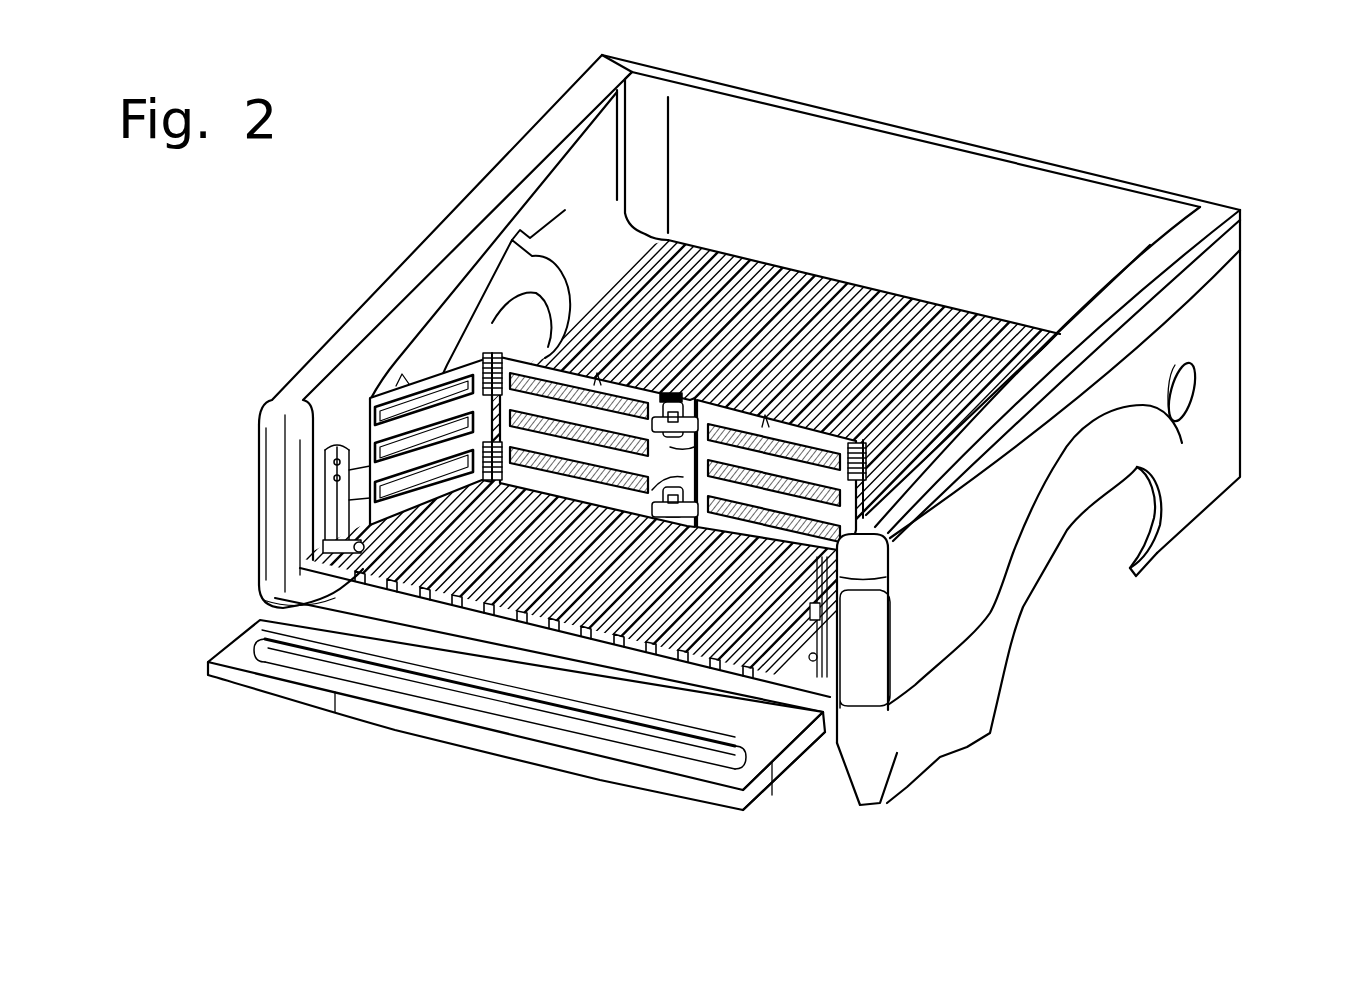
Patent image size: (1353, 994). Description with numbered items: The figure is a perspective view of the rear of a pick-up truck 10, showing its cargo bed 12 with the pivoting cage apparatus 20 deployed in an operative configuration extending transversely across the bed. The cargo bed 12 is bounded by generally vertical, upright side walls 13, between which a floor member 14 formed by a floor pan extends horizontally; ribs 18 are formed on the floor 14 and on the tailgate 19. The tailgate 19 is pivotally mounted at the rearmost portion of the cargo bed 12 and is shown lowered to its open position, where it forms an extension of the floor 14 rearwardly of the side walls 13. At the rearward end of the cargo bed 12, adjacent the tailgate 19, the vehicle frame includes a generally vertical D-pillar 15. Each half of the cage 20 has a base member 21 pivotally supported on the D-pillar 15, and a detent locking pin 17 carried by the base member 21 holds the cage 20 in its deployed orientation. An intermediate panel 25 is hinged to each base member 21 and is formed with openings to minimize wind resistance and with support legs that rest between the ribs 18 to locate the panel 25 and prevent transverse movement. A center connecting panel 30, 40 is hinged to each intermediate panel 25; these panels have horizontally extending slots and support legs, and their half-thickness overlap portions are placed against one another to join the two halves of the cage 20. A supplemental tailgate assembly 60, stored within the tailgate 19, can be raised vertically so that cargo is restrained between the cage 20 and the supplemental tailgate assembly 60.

The pick-up truck 10 is at (960, 113).
The cargo bed 12 is at (392, 254).
The side walls 13 is at (483, 196).
The floor member 14 is at (440, 580).
The D-pillar 15 is at (317, 419).
The detent locking pin 17 is at (363, 569).
The ribs 18 is at (641, 588).
The tailgate 19 is at (785, 780).
The pivoting cage apparatus 20 is at (523, 334).
The base member 21 is at (327, 464).
The intermediate panel 25 is at (382, 398).
The center connecting panel 30 is at (590, 372).
The center connecting panel 40 is at (850, 517).
The supplemental tailgate assembly 60 is at (588, 768).